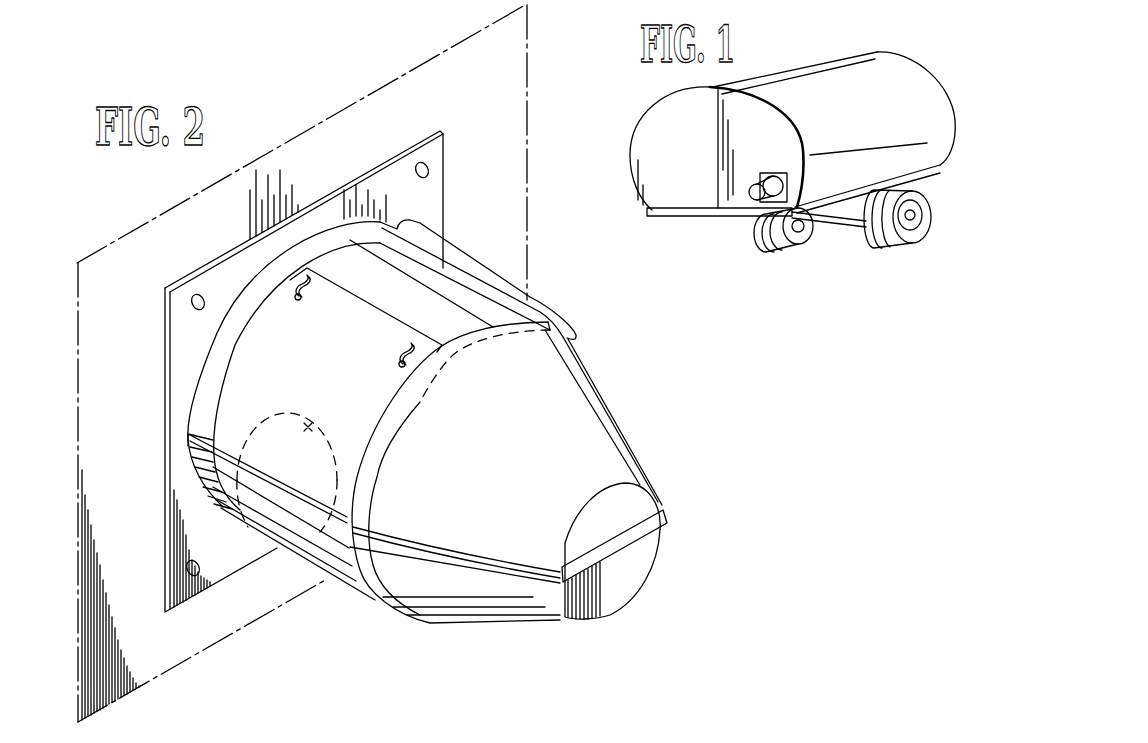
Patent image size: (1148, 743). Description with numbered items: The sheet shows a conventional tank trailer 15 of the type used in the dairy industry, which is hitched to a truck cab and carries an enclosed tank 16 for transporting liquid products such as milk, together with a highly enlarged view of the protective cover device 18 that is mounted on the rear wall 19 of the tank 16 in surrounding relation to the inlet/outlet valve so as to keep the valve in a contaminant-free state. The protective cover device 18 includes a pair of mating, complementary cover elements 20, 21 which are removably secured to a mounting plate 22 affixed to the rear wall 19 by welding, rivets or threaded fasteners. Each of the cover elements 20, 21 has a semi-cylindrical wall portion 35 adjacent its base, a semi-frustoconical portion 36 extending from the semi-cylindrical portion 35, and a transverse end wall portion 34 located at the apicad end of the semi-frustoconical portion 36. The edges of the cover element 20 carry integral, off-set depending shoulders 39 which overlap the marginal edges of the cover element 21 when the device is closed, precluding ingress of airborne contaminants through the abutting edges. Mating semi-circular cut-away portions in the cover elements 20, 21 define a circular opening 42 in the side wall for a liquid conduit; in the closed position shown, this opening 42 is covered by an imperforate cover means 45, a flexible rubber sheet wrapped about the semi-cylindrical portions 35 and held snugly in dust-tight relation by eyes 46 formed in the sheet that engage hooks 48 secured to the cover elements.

In FIG. 1, the tank trailer 15 is at (822, 46).
In FIG. 1, the tank 16 is at (778, 82).
In FIG. 2, the protective cover device 18 is at (592, 316).
In FIG. 1, the protective cover device 18 is at (760, 160).
In FIG. 2, the rear wall 19 is at (405, 77).
In FIG. 1, the rear wall 19 is at (653, 123).
In FIG. 2, the first cover element 20 is at (606, 454).
In FIG. 2, the second cover element 21 is at (490, 608).
In FIG. 2, the mounting plate 22 is at (221, 267).
In FIG. 2, the end wall portion 34 is at (643, 553).
In FIG. 2, the semi-cylindrical wall portion 35 is at (507, 300).
In FIG. 2, the semi-frustoconical portion 36 is at (578, 336).
In FIG. 2, the off-set depending shoulders 39 is at (190, 446).
In FIG. 2, the circular opening 42 is at (316, 423).
In FIG. 2, the imperforate cover means 45 is at (367, 312).
In FIG. 2, the eyes 46 is at (298, 298).
In FIG. 2, the hooks 48 is at (310, 272).